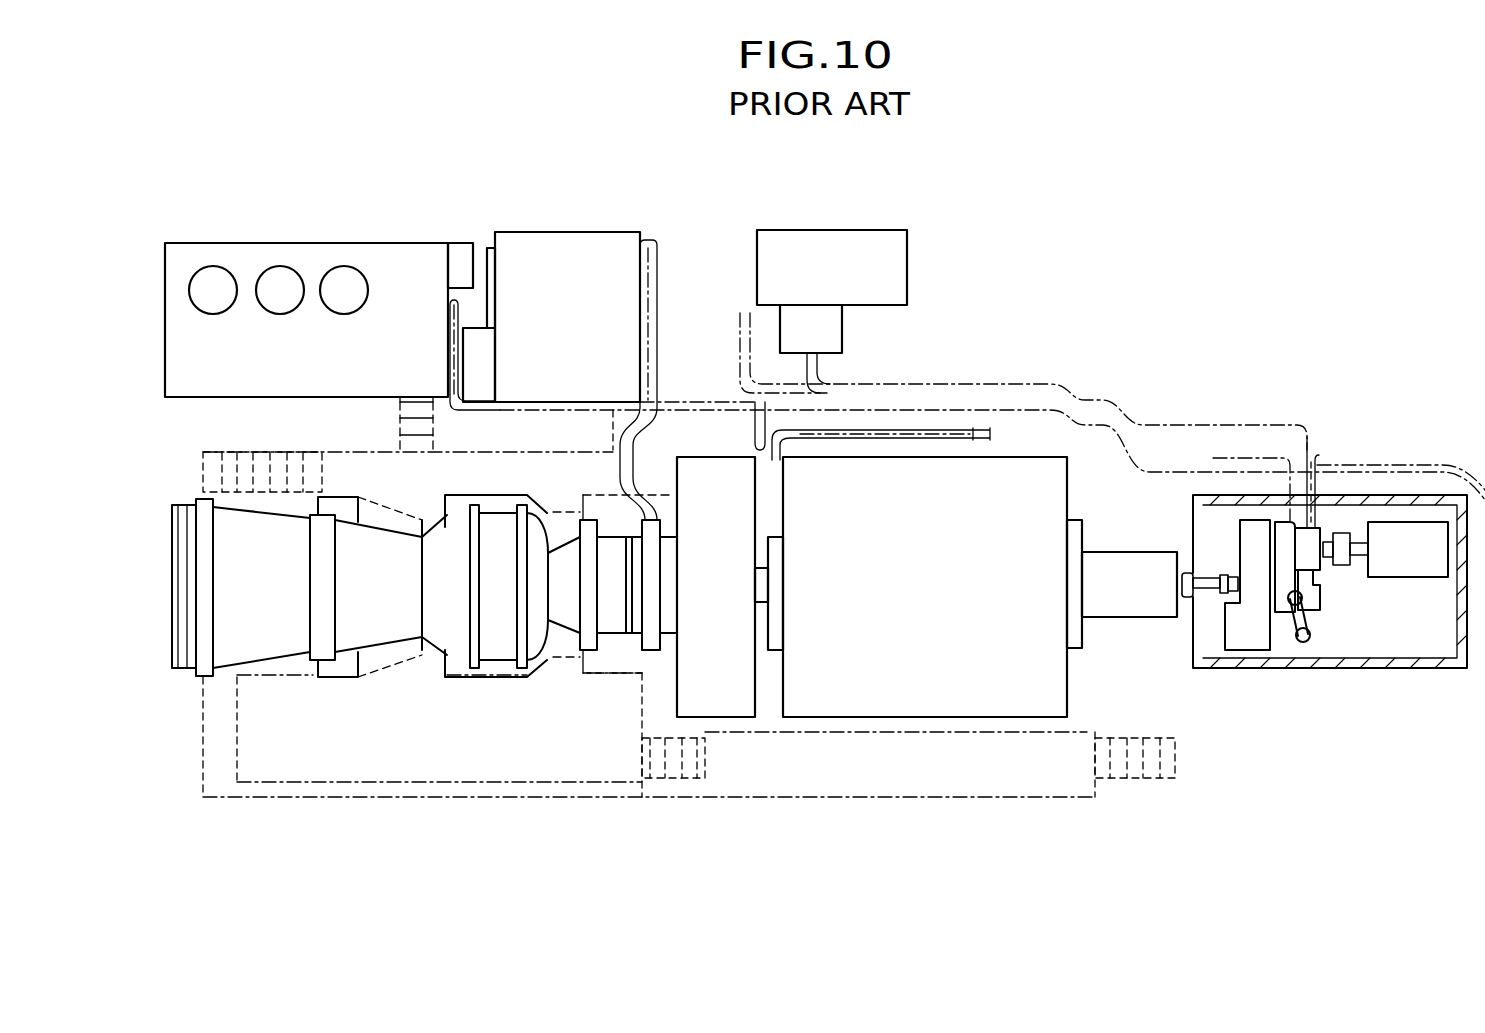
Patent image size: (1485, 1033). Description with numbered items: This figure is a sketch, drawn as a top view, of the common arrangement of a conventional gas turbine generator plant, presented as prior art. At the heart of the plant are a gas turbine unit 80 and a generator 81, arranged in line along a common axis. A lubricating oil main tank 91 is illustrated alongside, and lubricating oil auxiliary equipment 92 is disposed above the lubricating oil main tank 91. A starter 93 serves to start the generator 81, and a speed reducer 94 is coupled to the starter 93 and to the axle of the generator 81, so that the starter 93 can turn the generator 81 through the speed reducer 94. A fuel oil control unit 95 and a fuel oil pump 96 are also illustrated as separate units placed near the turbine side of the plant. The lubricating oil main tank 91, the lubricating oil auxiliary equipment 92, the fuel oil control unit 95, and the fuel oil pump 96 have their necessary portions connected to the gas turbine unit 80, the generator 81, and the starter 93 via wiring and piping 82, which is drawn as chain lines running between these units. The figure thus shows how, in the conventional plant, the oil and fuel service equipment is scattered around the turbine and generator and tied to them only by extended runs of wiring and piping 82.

The gas turbine unit 80 is at (493, 653).
The generator 81 is at (1060, 678).
The wiring and piping 82 is at (997, 383).
The lubricating oil main tank 91 is at (377, 245).
The lubricating oil auxiliary equipment 92 is at (276, 275).
The starter 93 is at (1397, 570).
The speed reducer 94 is at (1252, 546).
The fuel oil control unit 95 is at (567, 232).
The fuel oil pump 96 is at (857, 232).